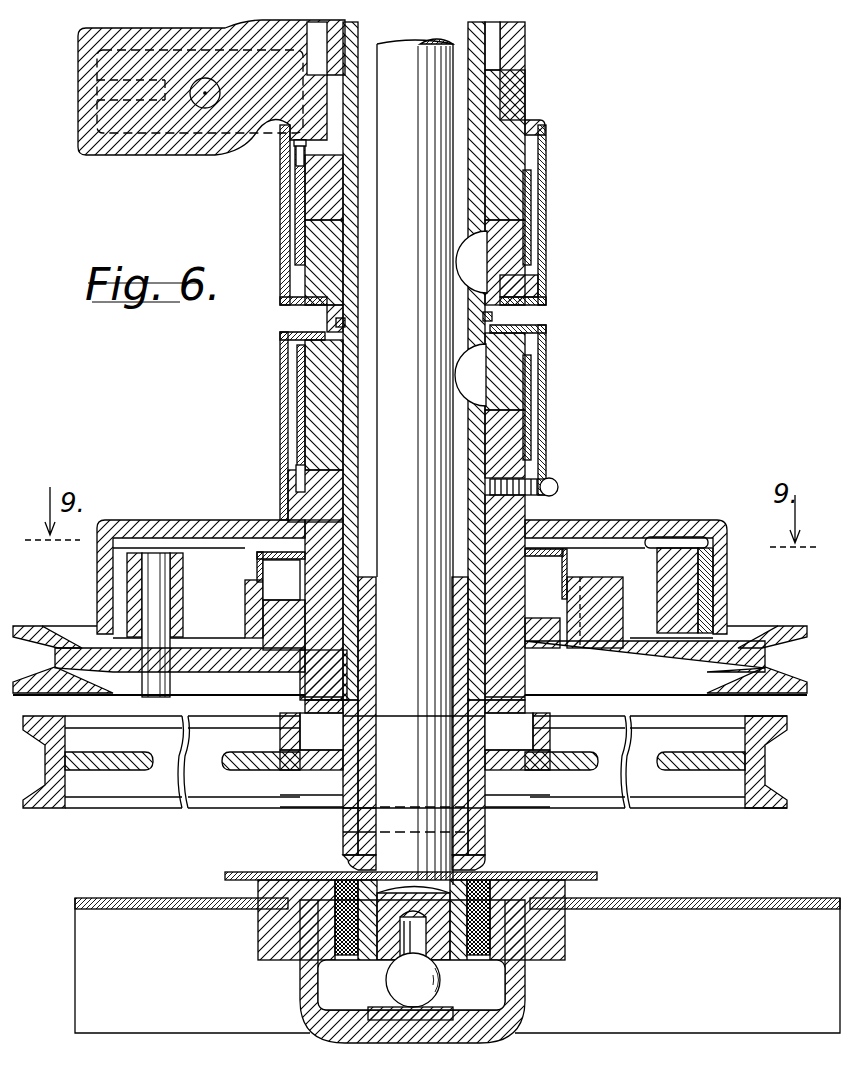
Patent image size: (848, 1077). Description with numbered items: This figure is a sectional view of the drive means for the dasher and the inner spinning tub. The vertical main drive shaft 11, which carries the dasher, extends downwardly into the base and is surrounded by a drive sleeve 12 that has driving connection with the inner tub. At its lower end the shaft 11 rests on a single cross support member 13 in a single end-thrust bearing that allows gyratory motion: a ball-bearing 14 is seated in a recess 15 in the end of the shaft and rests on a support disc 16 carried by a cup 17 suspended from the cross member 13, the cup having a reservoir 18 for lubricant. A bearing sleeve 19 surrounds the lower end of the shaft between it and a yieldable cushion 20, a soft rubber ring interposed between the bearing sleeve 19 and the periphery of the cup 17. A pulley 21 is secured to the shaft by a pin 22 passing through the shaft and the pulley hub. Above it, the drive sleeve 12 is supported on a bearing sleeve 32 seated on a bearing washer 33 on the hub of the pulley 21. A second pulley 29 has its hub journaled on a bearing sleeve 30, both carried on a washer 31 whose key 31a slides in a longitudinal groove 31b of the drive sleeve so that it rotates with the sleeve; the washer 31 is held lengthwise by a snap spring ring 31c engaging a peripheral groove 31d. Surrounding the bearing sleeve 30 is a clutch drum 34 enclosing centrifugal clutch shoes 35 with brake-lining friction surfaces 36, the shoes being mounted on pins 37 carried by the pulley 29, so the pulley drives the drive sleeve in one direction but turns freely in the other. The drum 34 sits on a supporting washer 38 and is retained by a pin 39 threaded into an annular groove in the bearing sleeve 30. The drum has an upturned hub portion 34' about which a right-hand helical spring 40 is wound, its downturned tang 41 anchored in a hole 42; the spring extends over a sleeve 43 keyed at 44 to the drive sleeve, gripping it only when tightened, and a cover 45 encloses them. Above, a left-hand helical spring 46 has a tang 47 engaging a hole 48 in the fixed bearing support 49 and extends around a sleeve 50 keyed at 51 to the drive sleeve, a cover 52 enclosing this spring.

The main drive shaft 11 is at (430, 140).
The drive sleeve 12 is at (414, 511).
The cross support member 13 is at (638, 912).
The ball-bearing 14 is at (430, 987).
The recess 15 is at (303, 968).
The support disc 16 is at (390, 1018).
The cup 17 is at (525, 997).
The reservoir 18 is at (487, 998).
The bearing sleeve 19 is at (400, 960).
The yieldable cushion 20 is at (487, 870).
The pulley 21 is at (753, 810).
The pin 22 is at (343, 823).
The pulley 29 is at (757, 624).
The bearing sleeve 30 is at (497, 672).
The washer 31 is at (305, 705).
The key 31a is at (347, 683).
The longitudinal groove 31b is at (343, 633).
The snap spring ring 31c is at (330, 698).
The peripheral groove 31d is at (485, 701).
The bearing sleeve 32 is at (300, 722).
The bearing washer 33 is at (483, 732).
The clutch drum 34 is at (404, 577).
The upturned hub portion 34' is at (285, 427).
The clutch shoes 35 is at (183, 598).
The friction surfaces 36 is at (710, 577).
The pins 37 is at (158, 672).
The supporting washer 38 is at (262, 560).
The pin 39 is at (556, 485).
The helical spring 40 is at (530, 425).
The downturned tang 41 is at (300, 467).
The hole 42 is at (300, 488).
The sleeve 43 is at (527, 353).
The key 44 is at (473, 382).
The cover 45 is at (548, 442).
The left-hand helical spring 46 is at (527, 223).
The tang 47 is at (297, 183).
The hole 48 is at (292, 150).
The bearing support 49 is at (480, 42).
The sleeve 50 is at (505, 285).
The key 51 is at (480, 252).
The cover 52 is at (547, 288).